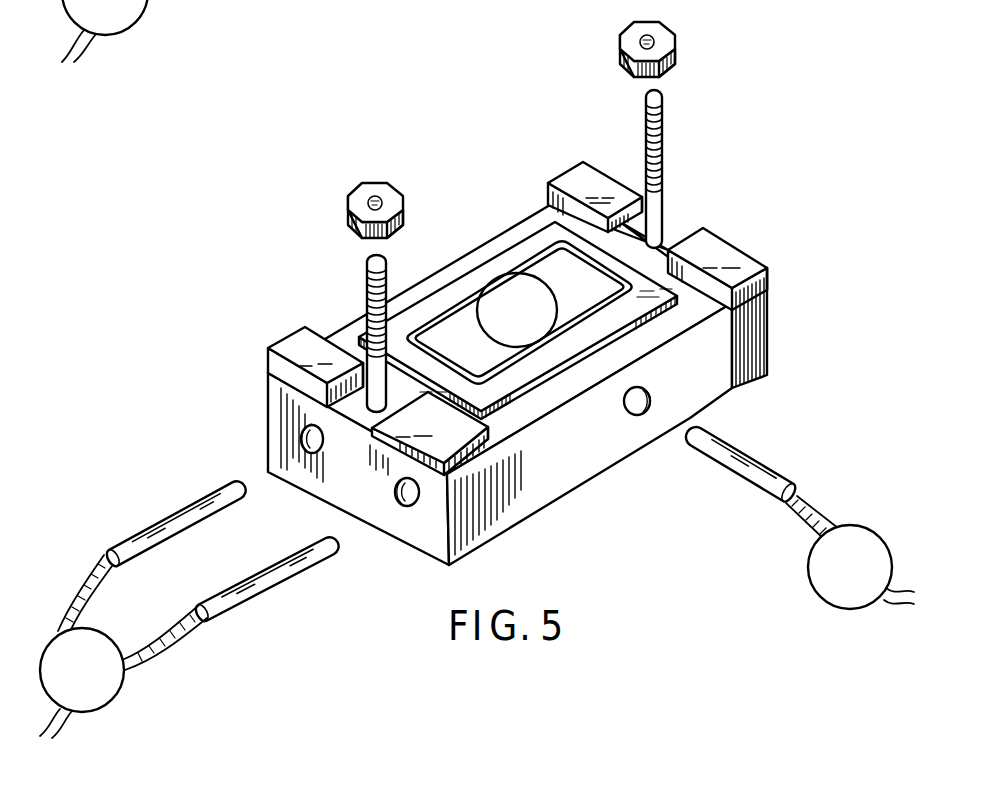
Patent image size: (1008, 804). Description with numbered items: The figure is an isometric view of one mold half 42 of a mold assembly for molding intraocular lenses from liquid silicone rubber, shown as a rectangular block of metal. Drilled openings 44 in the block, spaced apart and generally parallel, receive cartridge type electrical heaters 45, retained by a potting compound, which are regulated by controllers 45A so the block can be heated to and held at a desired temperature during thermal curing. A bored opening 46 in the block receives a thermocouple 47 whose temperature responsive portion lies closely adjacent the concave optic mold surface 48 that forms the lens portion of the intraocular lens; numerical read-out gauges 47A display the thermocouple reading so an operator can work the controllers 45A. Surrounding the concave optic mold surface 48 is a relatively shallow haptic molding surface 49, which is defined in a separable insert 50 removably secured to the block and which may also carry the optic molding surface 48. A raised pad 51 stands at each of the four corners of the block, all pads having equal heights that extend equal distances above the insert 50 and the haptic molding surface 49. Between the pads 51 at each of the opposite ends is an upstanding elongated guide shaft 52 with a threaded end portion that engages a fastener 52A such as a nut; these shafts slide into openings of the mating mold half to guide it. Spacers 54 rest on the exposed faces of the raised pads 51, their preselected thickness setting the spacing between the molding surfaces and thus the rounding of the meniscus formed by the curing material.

The mold half 42 is at (553, 493).
The drilled openings 44 is at (315, 454).
The cartridge type electrical heaters 45 is at (157, 520).
The controllers 45A is at (110, 702).
The bored opening 46 is at (645, 414).
The thermocouple 47 is at (752, 459).
The numerical read-out gauges 47A is at (812, 588).
The concave optic mold surface 48 is at (484, 282).
The haptic molding surface 49 is at (529, 258).
The separable insert 50 is at (640, 312).
The raised pad 51 is at (290, 345).
The guide shaft 52 is at (386, 292).
The fastener 52A is at (404, 205).
The spacers 54 is at (442, 478).